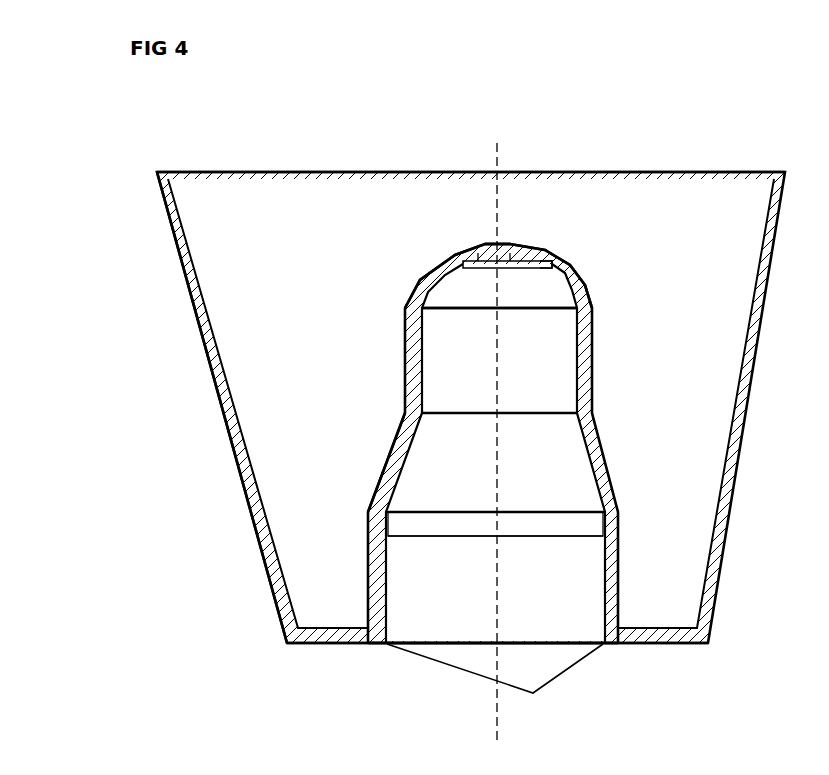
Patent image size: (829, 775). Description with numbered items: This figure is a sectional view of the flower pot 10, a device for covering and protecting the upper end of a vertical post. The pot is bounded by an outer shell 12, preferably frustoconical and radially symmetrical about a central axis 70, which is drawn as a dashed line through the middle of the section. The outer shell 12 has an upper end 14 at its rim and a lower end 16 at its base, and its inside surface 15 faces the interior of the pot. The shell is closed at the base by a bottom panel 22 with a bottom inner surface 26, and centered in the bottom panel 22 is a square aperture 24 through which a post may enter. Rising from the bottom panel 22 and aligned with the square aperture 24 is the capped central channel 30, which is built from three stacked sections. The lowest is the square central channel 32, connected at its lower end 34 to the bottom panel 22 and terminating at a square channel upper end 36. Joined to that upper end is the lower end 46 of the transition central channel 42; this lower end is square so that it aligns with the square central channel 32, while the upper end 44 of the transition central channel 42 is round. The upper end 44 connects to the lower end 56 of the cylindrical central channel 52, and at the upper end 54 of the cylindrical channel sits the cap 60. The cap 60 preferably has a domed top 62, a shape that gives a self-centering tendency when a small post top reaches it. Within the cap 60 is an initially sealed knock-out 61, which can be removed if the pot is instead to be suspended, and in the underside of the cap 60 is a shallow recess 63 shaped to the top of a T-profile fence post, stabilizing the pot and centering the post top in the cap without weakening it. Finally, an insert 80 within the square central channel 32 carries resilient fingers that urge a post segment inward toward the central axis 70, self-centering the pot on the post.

The flower pot 10 is at (155, 262).
The outer shell 12 is at (200, 338).
The upper end 14 is at (157, 174).
The inside surface 15 is at (682, 312).
The lower end 16 is at (288, 641).
The bottom panel 22 is at (635, 645).
The square aperture 24 is at (533, 693).
The bottom inner surface 26 is at (338, 645).
The capped central channel 30 is at (402, 415).
The square central channel 32 is at (557, 599).
The lower end 34 is at (458, 638).
The square channel upper end 36 is at (482, 514).
The transition central channel 42 is at (554, 490).
The upper end 44 is at (482, 418).
The lower end 46 is at (468, 512).
The cylindrical central channel 52 is at (472, 377).
The upper end 54 is at (520, 310).
The lower end 56 is at (518, 414).
The cap 60 is at (570, 272).
The knock-out 61 is at (490, 249).
The domed top 62 is at (462, 264).
The recess 63 is at (512, 269).
The central axis 70 is at (499, 160).
The insert 80 is at (558, 534).